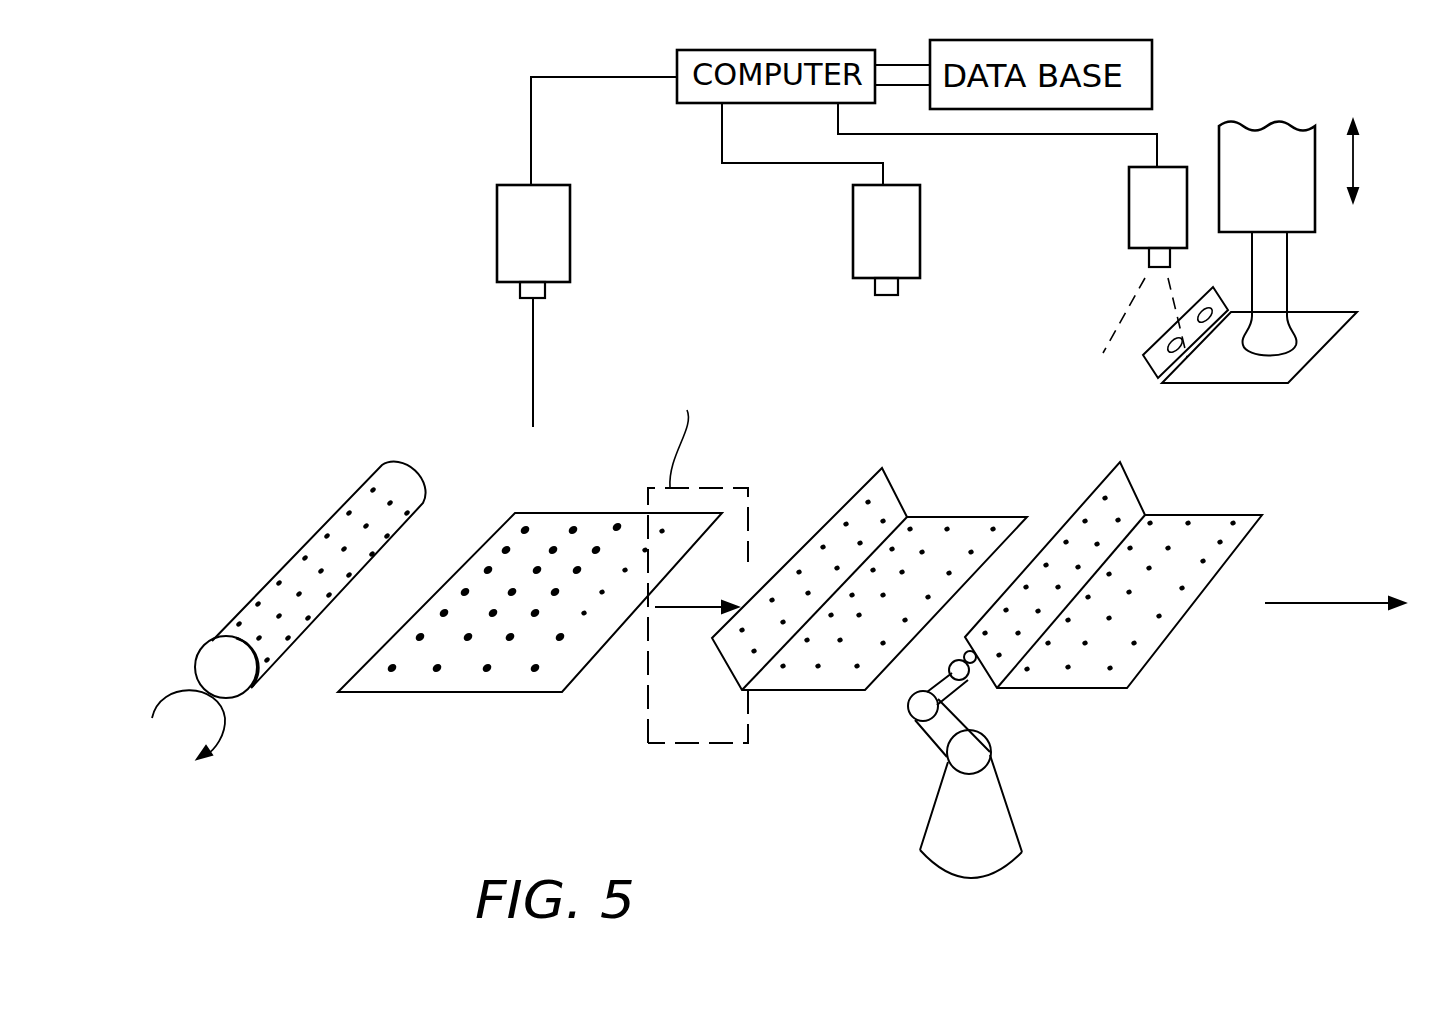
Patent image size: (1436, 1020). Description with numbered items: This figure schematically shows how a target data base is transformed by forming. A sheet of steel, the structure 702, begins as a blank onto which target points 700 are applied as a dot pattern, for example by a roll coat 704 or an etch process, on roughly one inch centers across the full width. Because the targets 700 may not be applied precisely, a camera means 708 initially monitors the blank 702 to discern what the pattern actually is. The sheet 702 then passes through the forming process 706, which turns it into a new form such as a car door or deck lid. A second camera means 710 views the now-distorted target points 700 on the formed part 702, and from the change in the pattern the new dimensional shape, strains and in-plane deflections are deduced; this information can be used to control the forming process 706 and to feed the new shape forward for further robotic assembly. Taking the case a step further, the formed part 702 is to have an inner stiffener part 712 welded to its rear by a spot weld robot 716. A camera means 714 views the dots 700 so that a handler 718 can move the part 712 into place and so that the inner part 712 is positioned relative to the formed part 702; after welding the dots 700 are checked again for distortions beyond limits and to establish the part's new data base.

The target points 700 is at (1025, 460).
The structure / steel blank / formed part 702 is at (418, 693).
The roll coat 704 is at (397, 472).
The forming process 706 is at (737, 507).
The camera means 708 is at (517, 217).
The camera means 710 is at (868, 230).
The inner stiffener part 712 is at (1277, 368).
The camera means 714 is at (1147, 225).
The spot weld robot 716 is at (990, 837).
The handler 718 is at (1293, 203).